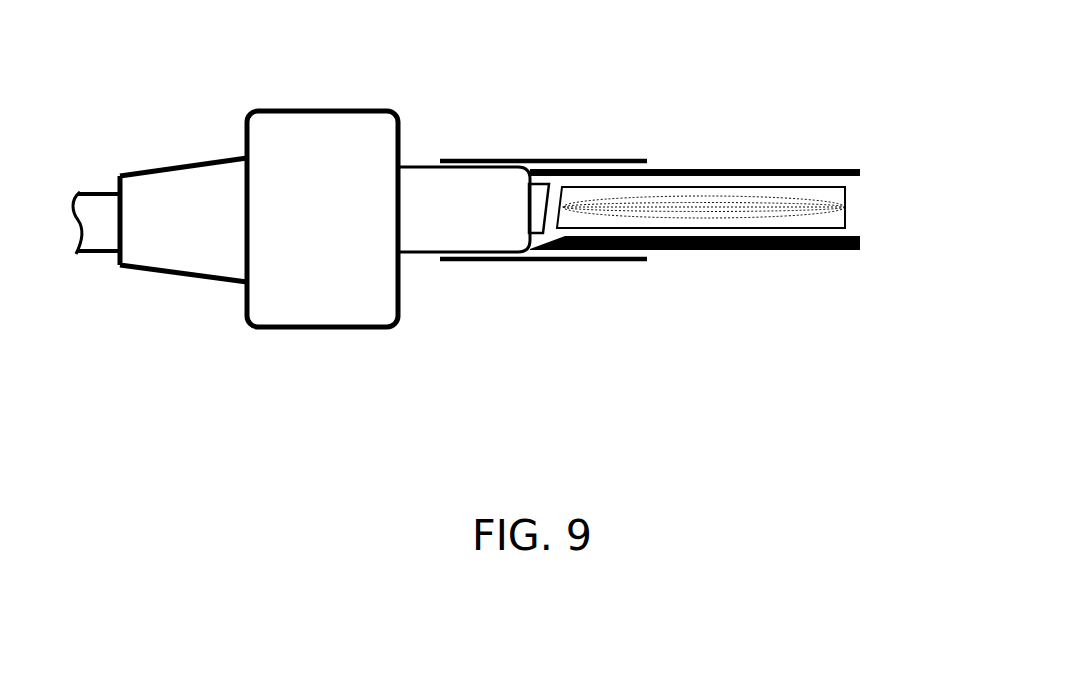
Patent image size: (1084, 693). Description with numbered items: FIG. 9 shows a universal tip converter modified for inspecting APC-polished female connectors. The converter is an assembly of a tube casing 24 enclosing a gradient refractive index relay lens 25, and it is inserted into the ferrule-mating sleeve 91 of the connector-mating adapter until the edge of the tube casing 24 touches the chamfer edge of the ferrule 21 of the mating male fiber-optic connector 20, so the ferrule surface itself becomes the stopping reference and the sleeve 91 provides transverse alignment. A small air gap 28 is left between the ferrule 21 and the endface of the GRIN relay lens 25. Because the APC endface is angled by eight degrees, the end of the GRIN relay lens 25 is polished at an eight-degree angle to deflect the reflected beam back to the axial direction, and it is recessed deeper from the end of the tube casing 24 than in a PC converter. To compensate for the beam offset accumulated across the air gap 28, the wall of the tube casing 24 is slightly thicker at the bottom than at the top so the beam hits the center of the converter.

The male fiber-optic connector 20 is at (200, 285).
The ferrule 21 is at (435, 217).
The ferrule-mating sleeve 91 is at (497, 158).
The tube casing 24 is at (658, 170).
The air gap 28 is at (556, 187).
The GRIN relay lens 25 is at (672, 228).